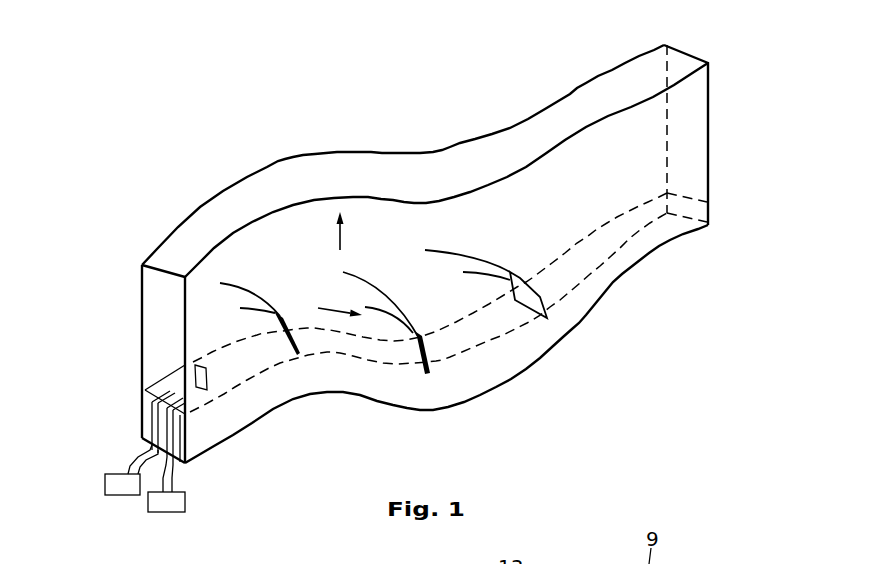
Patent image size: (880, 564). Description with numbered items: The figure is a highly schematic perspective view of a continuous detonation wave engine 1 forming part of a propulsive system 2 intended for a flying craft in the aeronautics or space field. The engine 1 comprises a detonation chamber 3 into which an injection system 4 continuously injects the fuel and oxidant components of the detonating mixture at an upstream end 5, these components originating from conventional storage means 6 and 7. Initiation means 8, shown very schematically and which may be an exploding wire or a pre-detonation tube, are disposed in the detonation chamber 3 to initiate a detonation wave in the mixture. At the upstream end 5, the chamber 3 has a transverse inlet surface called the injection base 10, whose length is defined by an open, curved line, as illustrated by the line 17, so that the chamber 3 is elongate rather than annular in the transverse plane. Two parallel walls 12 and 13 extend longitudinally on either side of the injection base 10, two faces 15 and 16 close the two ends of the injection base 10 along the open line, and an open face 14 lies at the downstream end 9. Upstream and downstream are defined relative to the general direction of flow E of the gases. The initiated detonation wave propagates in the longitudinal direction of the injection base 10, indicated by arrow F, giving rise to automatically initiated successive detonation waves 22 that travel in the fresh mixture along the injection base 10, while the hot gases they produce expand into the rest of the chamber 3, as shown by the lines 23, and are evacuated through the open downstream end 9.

The engine 1 is at (124, 204).
The propulsive system 2 is at (160, 171).
The detonation chamber 3 is at (140, 280).
The injection system 4 is at (127, 514).
The upstream end 5 is at (625, 296).
The storage means 6 is at (105, 490).
The storage means 7 is at (185, 499).
The initiation means 8 is at (207, 380).
The downstream end 9 is at (602, 62).
The injection base 10 is at (506, 369).
The wall 12 is at (696, 137).
The wall 13 is at (511, 128).
The open face 14 is at (444, 148).
The face 15 is at (133, 338).
The face 16 is at (724, 89).
The line 17 is at (620, 248).
The successive detonation waves 22 is at (298, 343).
The lines illustrating expansion of detonation products 23 is at (260, 308).
The general direction of flow E is at (343, 237).
The arrow indicating longitudinal direction of the injection base F is at (320, 306).